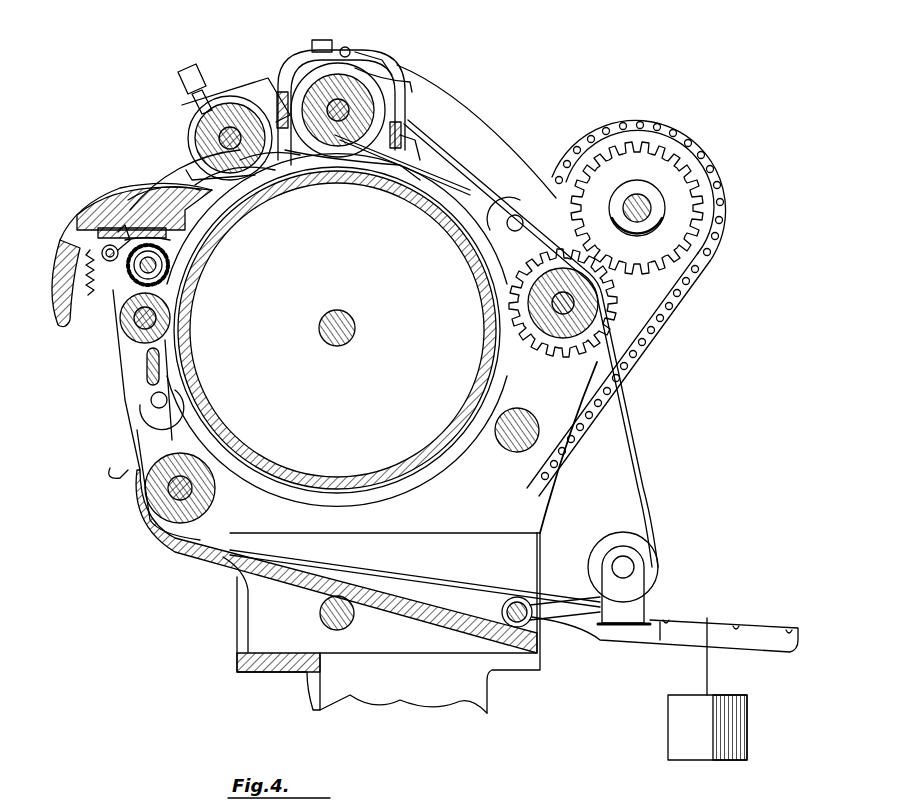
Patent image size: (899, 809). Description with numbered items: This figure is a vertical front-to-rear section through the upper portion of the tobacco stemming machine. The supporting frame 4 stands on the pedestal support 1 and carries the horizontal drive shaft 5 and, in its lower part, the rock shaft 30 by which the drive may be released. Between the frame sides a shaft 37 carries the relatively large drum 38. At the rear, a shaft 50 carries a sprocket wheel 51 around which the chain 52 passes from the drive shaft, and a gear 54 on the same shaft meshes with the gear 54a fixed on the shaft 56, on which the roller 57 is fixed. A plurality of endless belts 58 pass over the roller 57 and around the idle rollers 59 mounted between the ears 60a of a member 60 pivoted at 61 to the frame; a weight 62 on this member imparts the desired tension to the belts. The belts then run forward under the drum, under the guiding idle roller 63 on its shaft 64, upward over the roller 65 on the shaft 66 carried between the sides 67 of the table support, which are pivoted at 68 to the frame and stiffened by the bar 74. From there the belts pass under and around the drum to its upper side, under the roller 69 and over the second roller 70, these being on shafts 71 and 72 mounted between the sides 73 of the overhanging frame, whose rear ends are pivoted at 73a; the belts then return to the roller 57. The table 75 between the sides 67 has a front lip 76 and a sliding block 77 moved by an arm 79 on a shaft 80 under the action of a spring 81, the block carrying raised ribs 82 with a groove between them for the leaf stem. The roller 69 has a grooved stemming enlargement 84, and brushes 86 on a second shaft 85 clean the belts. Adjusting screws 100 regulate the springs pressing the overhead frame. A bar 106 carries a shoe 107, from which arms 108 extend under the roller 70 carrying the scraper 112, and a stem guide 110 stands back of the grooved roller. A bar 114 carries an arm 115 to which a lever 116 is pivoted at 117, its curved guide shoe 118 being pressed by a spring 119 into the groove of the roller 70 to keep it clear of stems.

The pedestal support 1 is at (296, 700).
The supporting frame 4 is at (230, 594).
The drive shaft 5 is at (513, 453).
The rock shaft 30 is at (347, 625).
The shaft 37 is at (347, 320).
The drum 38 is at (205, 404).
The shaft 50 is at (636, 198).
The sprocket wheel 51 is at (672, 274).
The chain 52 is at (645, 337).
The gear 54 is at (690, 205).
The gear 54a is at (612, 312).
The shaft 56 is at (563, 317).
The roller 57 is at (545, 327).
The endless belts 58 is at (467, 170).
The idle rollers 59 is at (652, 566).
The member 60 is at (650, 642).
The ears 60a is at (637, 600).
The pivot 61 is at (528, 622).
The weight 62 is at (740, 714).
The guiding idle roller 63 is at (216, 493).
The shaft 64 is at (170, 527).
The roller 65 is at (135, 337).
The shaft 66 is at (132, 324).
The sides 67 is at (110, 297).
The pivot 68 is at (152, 404).
The roller 69 is at (245, 170).
The second roller 70 is at (340, 148).
The shaft 71 is at (215, 140).
The shaft 72 is at (385, 108).
The sides 73 is at (455, 137).
The pivotal connection 73a is at (510, 228).
The bar 74 is at (160, 366).
The table 75 is at (165, 252).
The lip 76 is at (65, 300).
The block 77 is at (234, 238).
The arm 79 is at (105, 212).
The shaft 80 is at (102, 255).
The spring 81 is at (82, 270).
The raised ribs 82 is at (145, 185).
The grooved stemming annular enlargement 84 is at (210, 167).
The second shaft 85 is at (166, 268).
The brushes 86 is at (160, 275).
The adjusting screws 100 is at (200, 85).
The bar 106 is at (440, 120).
The shoe 107 is at (400, 142).
The arms 108 is at (365, 160).
The stem guide 110 is at (450, 110).
The scraper 112 is at (300, 185).
The bar 114 is at (290, 95).
The arm 115 is at (292, 62).
The lever 116 is at (368, 57).
The pivot 117 is at (360, 50).
The curved guide shoe 118 is at (395, 82).
The spring 119 is at (345, 50).